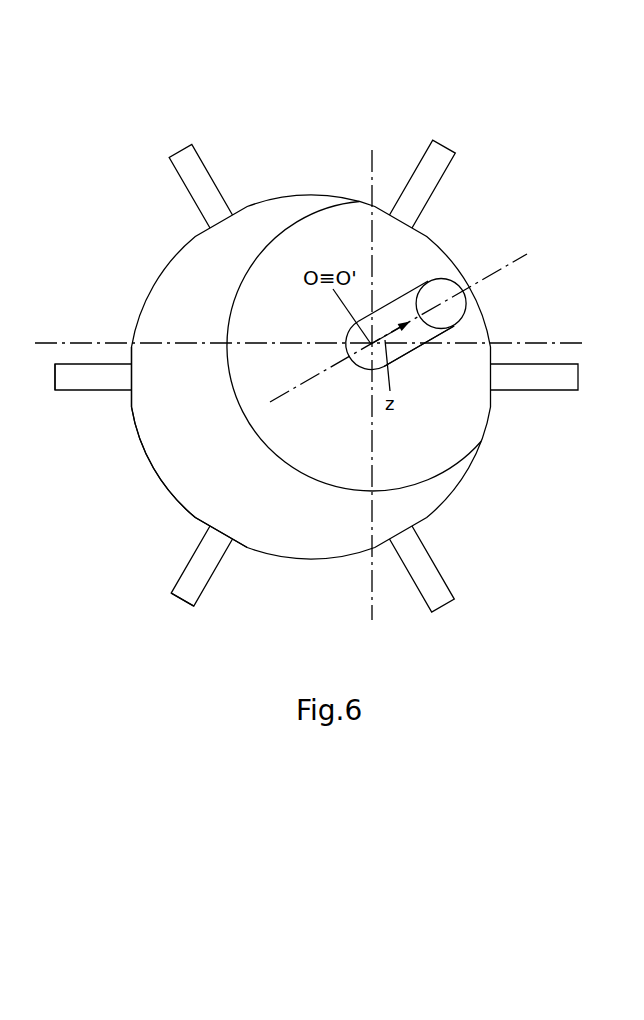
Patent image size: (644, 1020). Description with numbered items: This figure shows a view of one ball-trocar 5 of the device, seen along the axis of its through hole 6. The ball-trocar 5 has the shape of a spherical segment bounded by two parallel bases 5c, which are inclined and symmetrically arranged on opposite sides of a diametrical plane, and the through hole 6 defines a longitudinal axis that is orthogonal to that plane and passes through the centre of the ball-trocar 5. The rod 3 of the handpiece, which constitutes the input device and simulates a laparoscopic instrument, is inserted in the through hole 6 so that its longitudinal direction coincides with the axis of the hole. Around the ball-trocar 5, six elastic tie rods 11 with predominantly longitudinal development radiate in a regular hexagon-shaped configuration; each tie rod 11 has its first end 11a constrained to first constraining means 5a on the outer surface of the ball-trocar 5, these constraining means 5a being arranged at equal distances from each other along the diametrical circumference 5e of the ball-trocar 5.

The rod 3 is at (417, 372).
The ball-trocar 5 is at (447, 219).
The first constraining means 5a is at (135, 372).
The bases 5c is at (311, 240).
The diametrical circumference 5e is at (160, 475).
The through hole 6 is at (332, 328).
The elastic tie rods 11 is at (440, 160).
The first end 11a is at (110, 380).